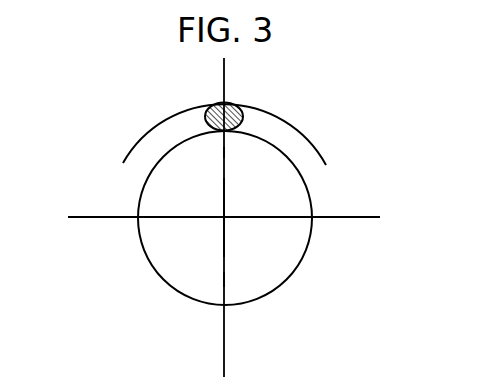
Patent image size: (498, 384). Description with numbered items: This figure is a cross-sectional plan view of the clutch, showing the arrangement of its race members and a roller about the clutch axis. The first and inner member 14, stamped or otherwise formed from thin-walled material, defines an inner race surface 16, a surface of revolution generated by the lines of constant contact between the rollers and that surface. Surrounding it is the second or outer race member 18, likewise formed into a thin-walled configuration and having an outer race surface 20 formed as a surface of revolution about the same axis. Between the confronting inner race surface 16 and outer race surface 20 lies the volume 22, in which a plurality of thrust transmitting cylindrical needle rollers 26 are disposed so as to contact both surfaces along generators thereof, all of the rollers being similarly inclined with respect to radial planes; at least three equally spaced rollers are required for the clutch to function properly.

The inner member 14 is at (285, 261).
The inner race surface 16 is at (245, 305).
The outer race member 18 is at (123, 122).
The outer race surface 20 is at (124, 163).
The volume 22 is at (295, 143).
The cylindrical needle rollers 26 is at (243, 104).